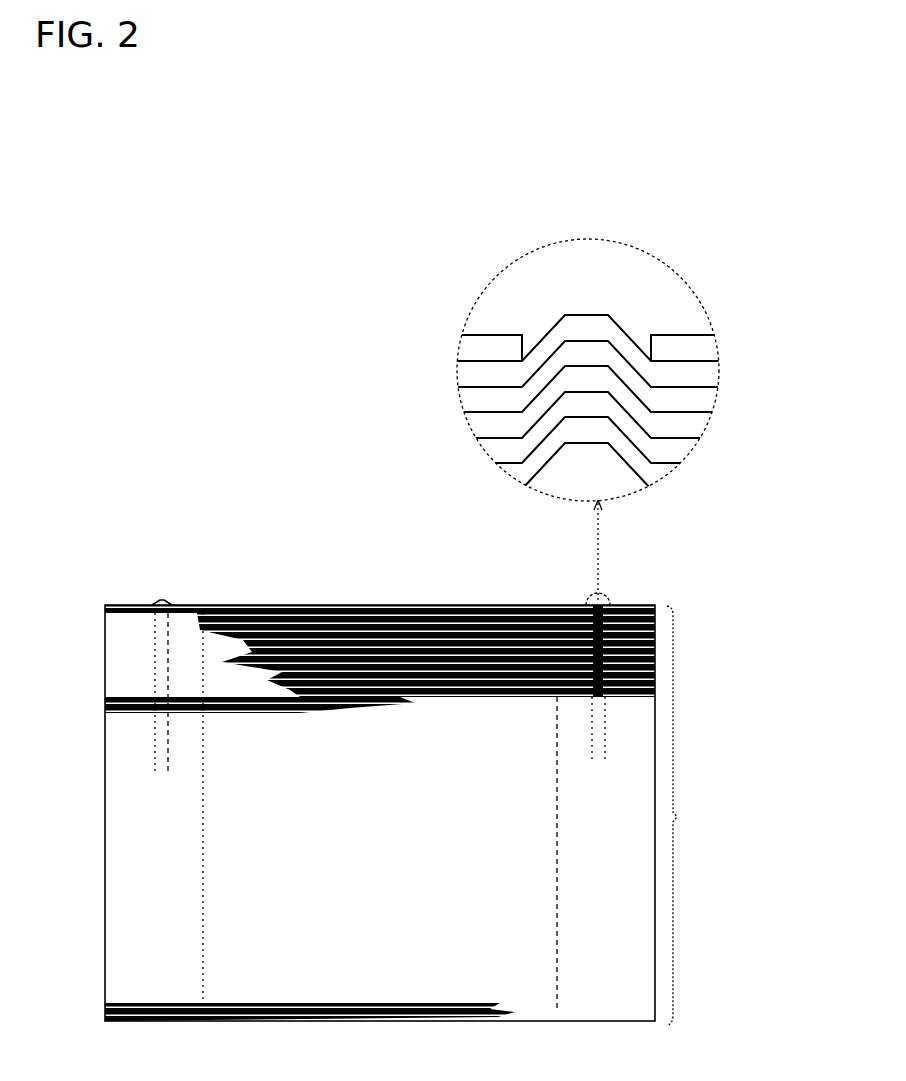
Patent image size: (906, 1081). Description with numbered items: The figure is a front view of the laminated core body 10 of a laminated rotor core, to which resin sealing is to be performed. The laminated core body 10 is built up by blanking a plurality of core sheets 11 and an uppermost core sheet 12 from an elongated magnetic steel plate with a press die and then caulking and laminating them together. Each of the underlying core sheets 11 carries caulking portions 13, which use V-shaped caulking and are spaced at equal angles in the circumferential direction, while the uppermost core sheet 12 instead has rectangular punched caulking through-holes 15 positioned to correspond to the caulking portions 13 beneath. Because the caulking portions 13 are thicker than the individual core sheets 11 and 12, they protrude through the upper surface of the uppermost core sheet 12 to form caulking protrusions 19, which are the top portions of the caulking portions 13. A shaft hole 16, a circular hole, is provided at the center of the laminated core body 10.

The laminated core body 10 is at (400, 597).
The core sheets 11 is at (698, 398).
The uppermost core sheet 12 is at (690, 350).
The caulking portions 13 is at (553, 337).
The caulking through-holes 15 is at (645, 342).
The shaft hole 16 is at (205, 645).
The caulking protrusions 19 is at (580, 323).